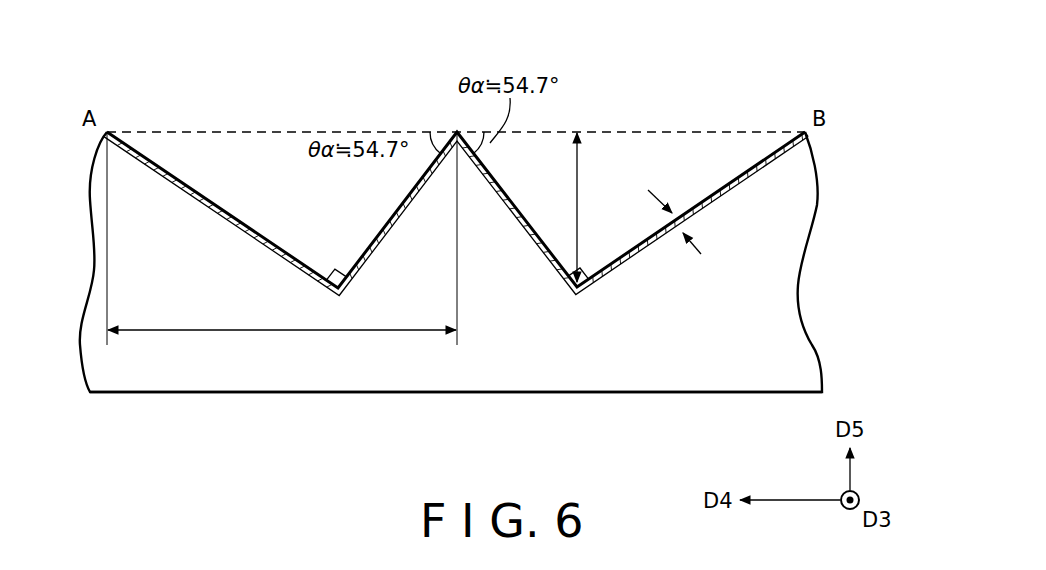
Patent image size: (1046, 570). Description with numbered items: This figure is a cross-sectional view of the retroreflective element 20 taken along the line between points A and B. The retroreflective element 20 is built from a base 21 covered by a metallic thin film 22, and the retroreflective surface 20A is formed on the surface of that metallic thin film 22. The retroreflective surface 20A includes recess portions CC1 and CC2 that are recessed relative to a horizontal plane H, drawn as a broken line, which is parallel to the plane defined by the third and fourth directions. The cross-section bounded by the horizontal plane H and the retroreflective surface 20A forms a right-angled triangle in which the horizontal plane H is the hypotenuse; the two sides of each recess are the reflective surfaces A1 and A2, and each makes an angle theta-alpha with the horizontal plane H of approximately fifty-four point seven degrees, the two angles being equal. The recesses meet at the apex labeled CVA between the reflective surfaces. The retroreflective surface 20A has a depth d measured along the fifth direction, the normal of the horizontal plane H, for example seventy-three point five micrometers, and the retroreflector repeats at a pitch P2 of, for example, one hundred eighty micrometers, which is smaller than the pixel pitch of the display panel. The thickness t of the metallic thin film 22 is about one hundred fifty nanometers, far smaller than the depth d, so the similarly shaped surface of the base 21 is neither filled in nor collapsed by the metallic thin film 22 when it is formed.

The retroreflective element 20 is at (832, 250).
The base 21 is at (797, 347).
The metallic thin film 22 is at (783, 155).
The retroreflective surface 20A is at (748, 163).
The horizontal plane H is at (193, 130).
The recess portion CC1 is at (322, 226).
The recess portion CC2 is at (612, 227).
The convex apex CVA is at (455, 130).
The reflective surface A1 is at (392, 203).
The reflective surface A2 is at (526, 206).
The depth d is at (586, 207).
The thickness t is at (668, 225).
The pitch P2 is at (282, 247).